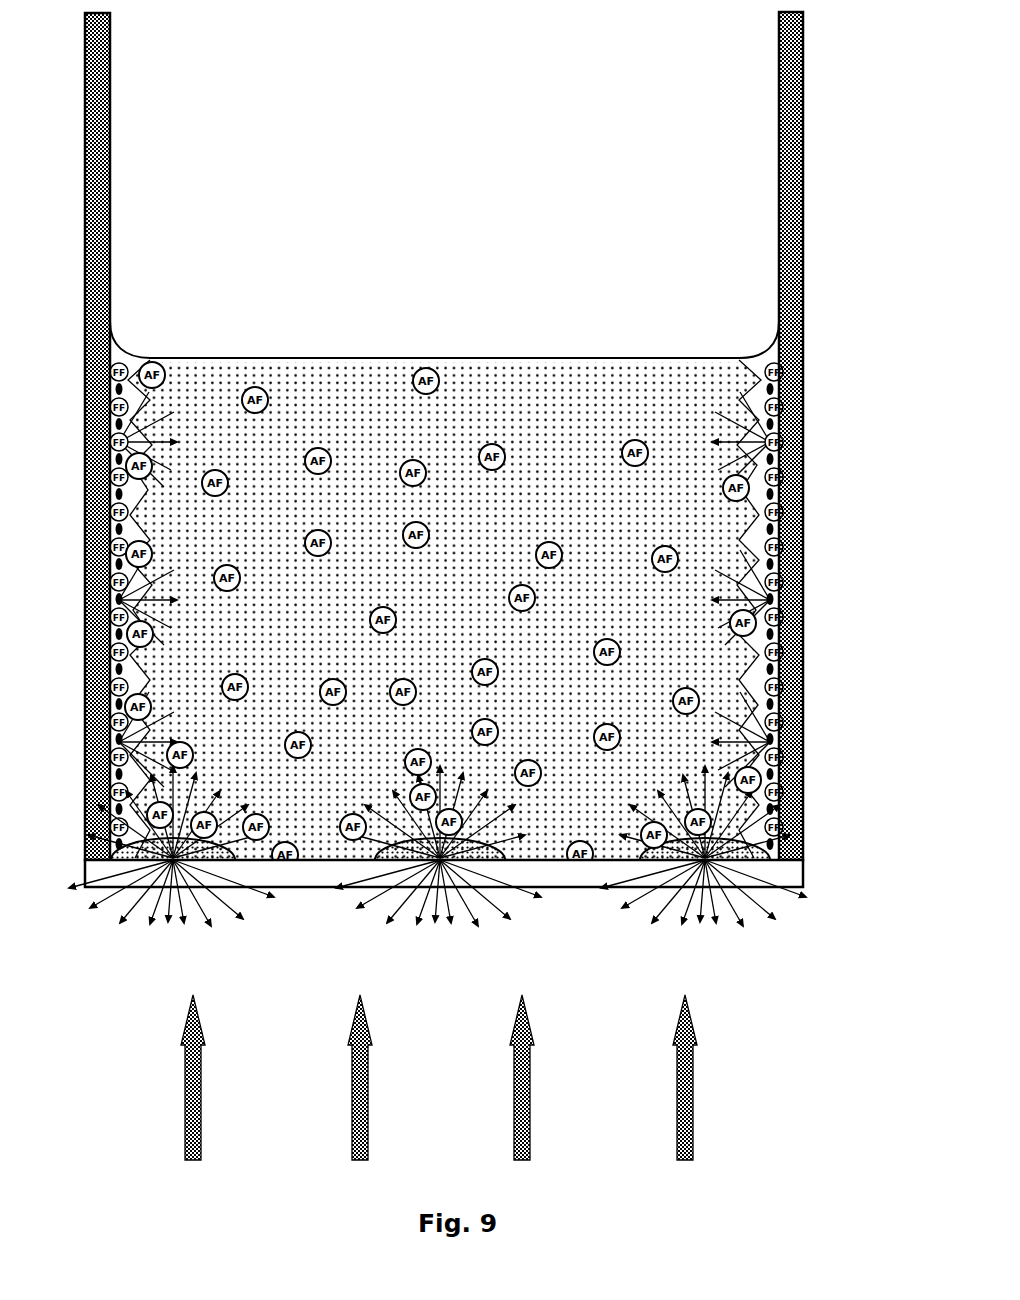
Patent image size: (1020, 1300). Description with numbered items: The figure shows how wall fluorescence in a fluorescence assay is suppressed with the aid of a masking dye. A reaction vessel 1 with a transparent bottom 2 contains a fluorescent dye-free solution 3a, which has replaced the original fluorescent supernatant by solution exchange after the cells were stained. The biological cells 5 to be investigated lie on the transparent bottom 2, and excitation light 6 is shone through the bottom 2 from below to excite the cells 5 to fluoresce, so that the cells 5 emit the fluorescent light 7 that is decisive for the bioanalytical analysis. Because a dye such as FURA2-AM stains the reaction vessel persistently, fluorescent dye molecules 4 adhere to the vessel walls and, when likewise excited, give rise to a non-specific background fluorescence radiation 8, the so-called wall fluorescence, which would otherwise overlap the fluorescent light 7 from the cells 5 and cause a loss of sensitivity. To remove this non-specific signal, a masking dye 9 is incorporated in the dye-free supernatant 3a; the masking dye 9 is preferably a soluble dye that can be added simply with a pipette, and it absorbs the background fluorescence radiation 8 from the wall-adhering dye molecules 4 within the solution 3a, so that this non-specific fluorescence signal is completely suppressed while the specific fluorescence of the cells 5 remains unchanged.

The reaction vessel 1 is at (794, 165).
The transparent bottom 2 is at (792, 873).
The fluorescent dye-free solution 3a is at (445, 610).
The fluorescent dye molecules 4 is at (116, 444).
The cells 5 is at (116, 884).
The excitation light 6 is at (705, 1113).
The fluorescent light 7 is at (180, 922).
The background fluorescence radiation 8 is at (336, 920).
The masking dye 9 is at (678, 557).